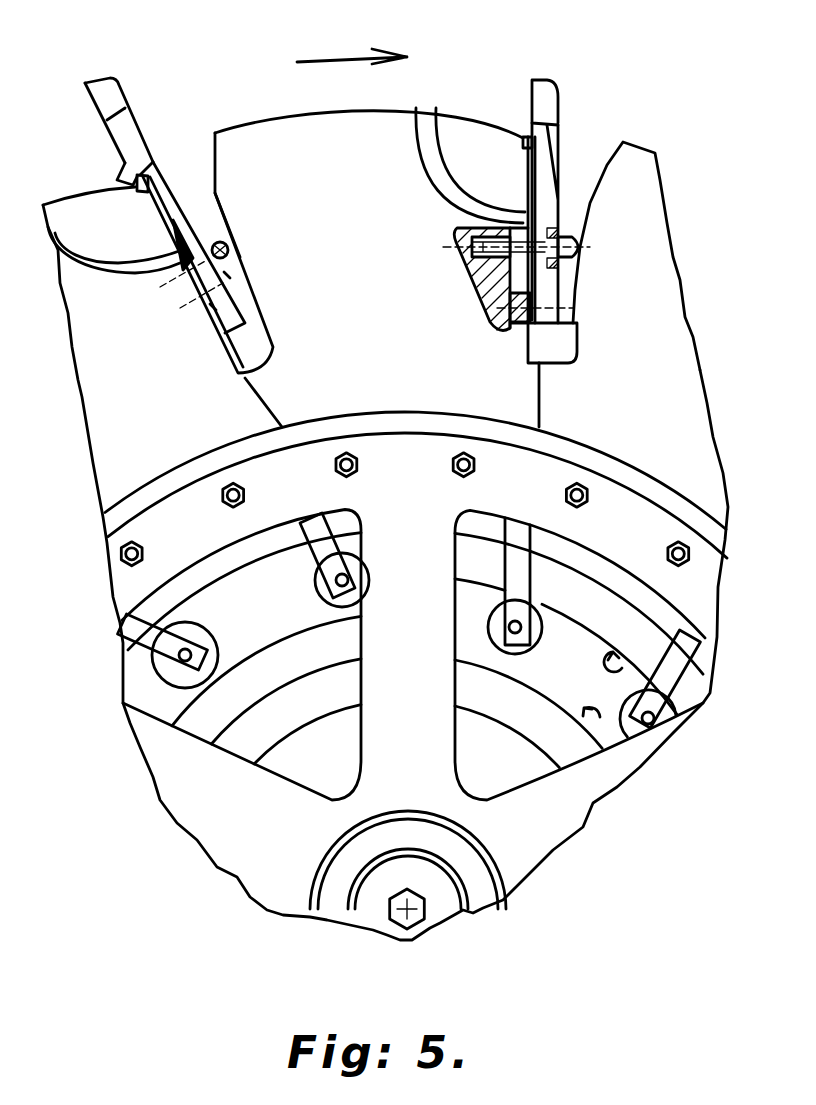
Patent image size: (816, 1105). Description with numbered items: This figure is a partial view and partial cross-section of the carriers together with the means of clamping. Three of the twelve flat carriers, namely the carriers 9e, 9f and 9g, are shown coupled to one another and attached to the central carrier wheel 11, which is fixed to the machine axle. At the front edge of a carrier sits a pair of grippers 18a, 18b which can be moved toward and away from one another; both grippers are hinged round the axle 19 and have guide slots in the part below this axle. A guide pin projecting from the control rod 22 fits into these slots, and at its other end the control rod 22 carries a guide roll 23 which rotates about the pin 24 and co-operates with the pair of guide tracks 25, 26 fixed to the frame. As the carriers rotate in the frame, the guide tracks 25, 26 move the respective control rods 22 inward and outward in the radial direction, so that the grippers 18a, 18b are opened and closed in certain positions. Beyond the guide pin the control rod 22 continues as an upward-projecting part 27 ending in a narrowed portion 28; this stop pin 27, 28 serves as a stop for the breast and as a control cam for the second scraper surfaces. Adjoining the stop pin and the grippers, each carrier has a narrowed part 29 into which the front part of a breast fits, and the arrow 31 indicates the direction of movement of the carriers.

The flat carrier 9e is at (84, 378).
The flat carrier 9f is at (361, 118).
The flat carrier 9g is at (690, 321).
The central carrier wheel 11 is at (710, 600).
The gripper 18a is at (168, 202).
The gripper 18b is at (210, 313).
The axle 19 is at (583, 247).
The control rod 22 is at (530, 572).
The guide roll 23 is at (502, 652).
The pin 24 is at (540, 637).
The guide track 25 is at (616, 664).
The guide track 26 is at (600, 717).
The upward-projecting part 27 is at (132, 137).
The narrowed portion 28 is at (112, 98).
The narrowed part 29 is at (475, 130).
The direction arrow 31 is at (355, 58).